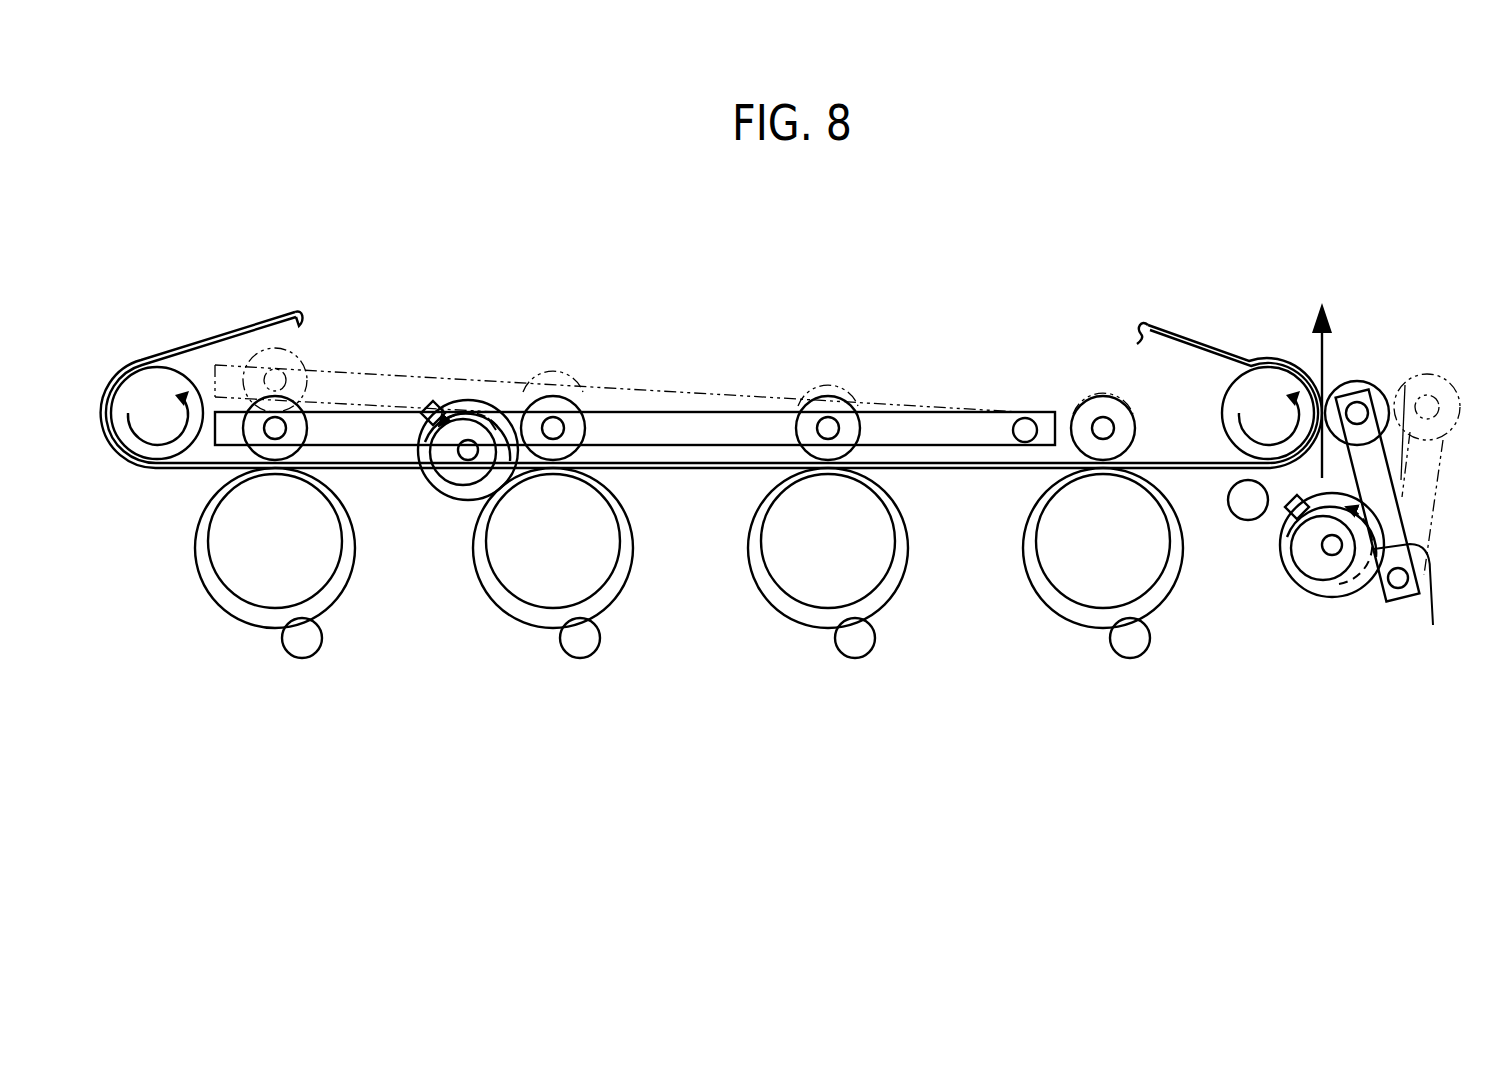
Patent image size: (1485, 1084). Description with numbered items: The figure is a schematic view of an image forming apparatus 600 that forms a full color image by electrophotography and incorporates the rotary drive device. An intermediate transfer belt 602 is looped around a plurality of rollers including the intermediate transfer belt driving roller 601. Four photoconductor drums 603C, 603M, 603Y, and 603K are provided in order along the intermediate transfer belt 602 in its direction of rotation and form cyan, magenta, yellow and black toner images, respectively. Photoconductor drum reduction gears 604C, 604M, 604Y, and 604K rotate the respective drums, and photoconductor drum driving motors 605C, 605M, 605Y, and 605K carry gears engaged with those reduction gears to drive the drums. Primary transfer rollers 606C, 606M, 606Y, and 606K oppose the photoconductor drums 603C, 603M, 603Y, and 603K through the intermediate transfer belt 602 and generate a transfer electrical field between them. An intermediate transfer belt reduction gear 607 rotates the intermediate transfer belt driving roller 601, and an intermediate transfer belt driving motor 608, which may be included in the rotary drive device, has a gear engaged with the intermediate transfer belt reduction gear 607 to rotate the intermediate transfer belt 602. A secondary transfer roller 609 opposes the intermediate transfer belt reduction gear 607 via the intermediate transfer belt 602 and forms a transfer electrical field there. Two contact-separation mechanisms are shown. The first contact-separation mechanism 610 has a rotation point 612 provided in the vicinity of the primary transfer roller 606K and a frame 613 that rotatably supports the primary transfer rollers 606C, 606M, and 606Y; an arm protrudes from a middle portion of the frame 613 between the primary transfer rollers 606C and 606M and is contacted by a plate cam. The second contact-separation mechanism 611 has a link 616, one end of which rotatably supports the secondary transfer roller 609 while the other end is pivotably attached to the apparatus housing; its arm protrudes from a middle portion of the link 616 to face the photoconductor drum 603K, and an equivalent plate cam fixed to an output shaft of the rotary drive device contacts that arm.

The image forming apparatus 600 is at (814, 288).
The intermediate transfer belt driving roller 601 is at (1260, 372).
The intermediate transfer belt 602 is at (1203, 346).
The photoconductor drum 603C is at (244, 598).
The photoconductor drum 603M is at (522, 598).
The photoconductor drum 603Y is at (797, 598).
The photoconductor drum 603K is at (1072, 598).
The photoconductor drum reduction gear 604C is at (218, 602).
The photoconductor drum reduction gear 604M is at (496, 602).
The photoconductor drum reduction gear 604Y is at (771, 602).
The photoconductor drum reduction gear 604K is at (1046, 602).
The photoconductor drum driving motor 605C is at (291, 655).
The photoconductor drum driving motor 605M is at (569, 655).
The photoconductor drum driving motor 605Y is at (844, 655).
The photoconductor drum driving motor 605K is at (1119, 655).
The primary transfer roller 606C is at (297, 402).
The primary transfer roller 606M is at (553, 397).
The primary transfer roller 606Y is at (828, 397).
The primary transfer roller 606K is at (1103, 397).
The intermediate transfer belt reduction gear 607 is at (1287, 360).
The intermediate transfer belt driving motor 608 is at (1242, 518).
The secondary transfer roller 609 is at (1360, 381).
The first contact-separation mechanism 610 is at (710, 404).
The second contact-separation mechanism 611 is at (1398, 350).
The rotation point 612 is at (1023, 419).
The frame 613 is at (957, 418).
The link 616 is at (1405, 385).